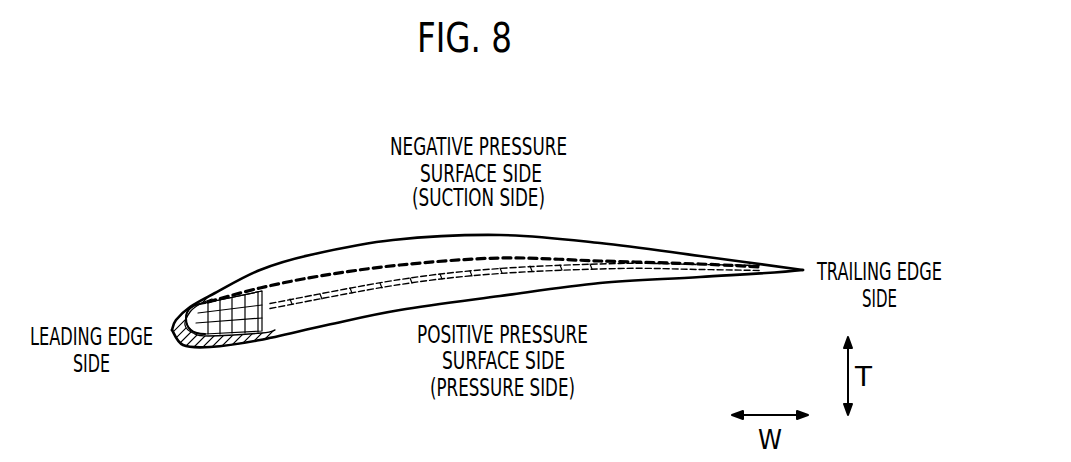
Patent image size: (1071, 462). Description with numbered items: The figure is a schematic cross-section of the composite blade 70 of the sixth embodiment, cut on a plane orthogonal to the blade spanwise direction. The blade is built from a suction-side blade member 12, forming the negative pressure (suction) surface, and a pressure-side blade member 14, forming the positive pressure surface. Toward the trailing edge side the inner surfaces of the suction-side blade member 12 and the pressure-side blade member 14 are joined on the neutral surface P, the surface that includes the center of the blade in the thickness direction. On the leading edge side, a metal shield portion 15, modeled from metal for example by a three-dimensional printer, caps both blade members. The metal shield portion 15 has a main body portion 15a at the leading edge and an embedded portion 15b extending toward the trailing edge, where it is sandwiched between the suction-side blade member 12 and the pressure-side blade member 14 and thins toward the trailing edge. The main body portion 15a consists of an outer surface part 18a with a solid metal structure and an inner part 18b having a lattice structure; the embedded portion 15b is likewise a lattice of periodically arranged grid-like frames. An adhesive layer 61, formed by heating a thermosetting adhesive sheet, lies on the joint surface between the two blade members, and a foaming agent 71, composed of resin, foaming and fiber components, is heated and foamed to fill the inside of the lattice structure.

The composite blade 70 is at (487, 257).
The suction-side blade member 12 is at (260, 265).
The pressure-side blade member 14 is at (331, 336).
The foaming agent 71 is at (427, 266).
The adhesive layer 61 is at (646, 265).
The neutral surface P is at (710, 265).
The metal shield portion 15 is at (270, 326).
The main body portion 15a is at (193, 309).
The embedded portion 15b is at (317, 291).
The outer surface part 18a is at (178, 322).
The inner part 18b is at (222, 345).